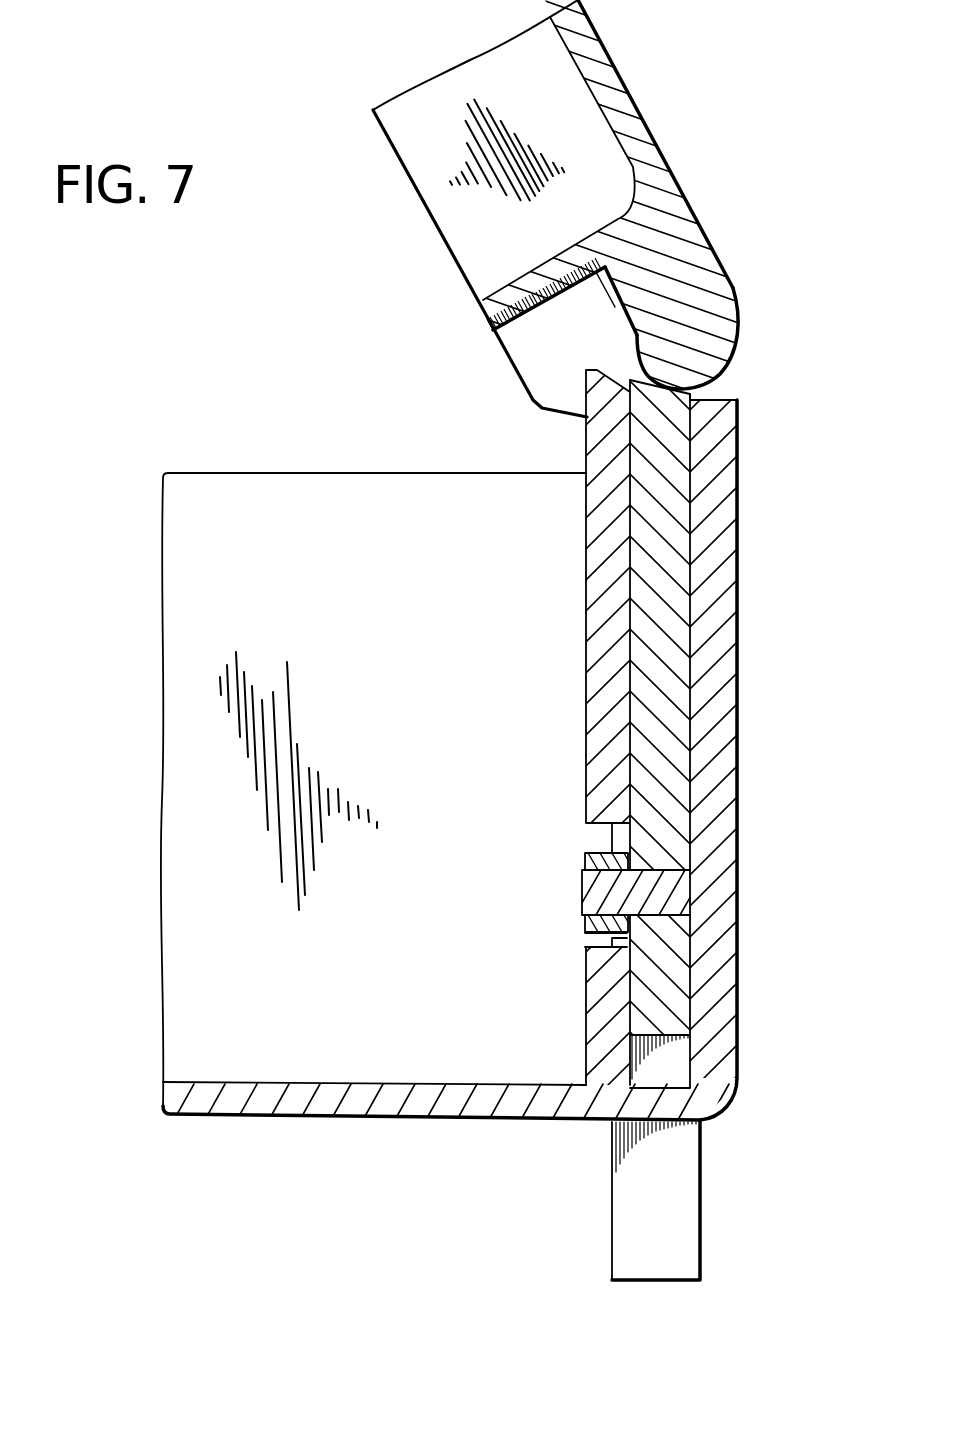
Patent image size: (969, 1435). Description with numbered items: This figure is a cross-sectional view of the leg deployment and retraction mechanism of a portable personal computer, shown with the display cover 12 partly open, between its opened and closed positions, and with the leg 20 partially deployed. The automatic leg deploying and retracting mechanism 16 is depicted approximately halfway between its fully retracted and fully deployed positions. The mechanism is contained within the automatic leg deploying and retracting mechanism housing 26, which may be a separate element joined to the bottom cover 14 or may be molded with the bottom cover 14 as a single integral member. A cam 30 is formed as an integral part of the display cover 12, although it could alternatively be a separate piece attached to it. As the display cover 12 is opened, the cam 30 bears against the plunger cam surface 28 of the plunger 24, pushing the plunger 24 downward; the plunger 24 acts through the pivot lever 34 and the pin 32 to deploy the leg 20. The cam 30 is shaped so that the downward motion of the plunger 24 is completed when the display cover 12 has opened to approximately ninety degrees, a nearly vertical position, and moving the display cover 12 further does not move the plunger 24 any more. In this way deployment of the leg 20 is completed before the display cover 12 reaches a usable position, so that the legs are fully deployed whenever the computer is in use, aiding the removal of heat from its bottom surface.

The display cover 12 is at (635, 116).
The bottom cover 14 is at (730, 668).
The automatic leg deploying and retracting mechanism 16 is at (393, 442).
The leg 20 is at (678, 1217).
The plunger 24 is at (633, 392).
The automatic leg deploying and retracting mechanism housing 26 is at (593, 592).
The plunger cam surface 28 is at (678, 390).
The cam 30 is at (727, 367).
The pin 32 is at (583, 895).
The pivot lever 34 is at (585, 862).